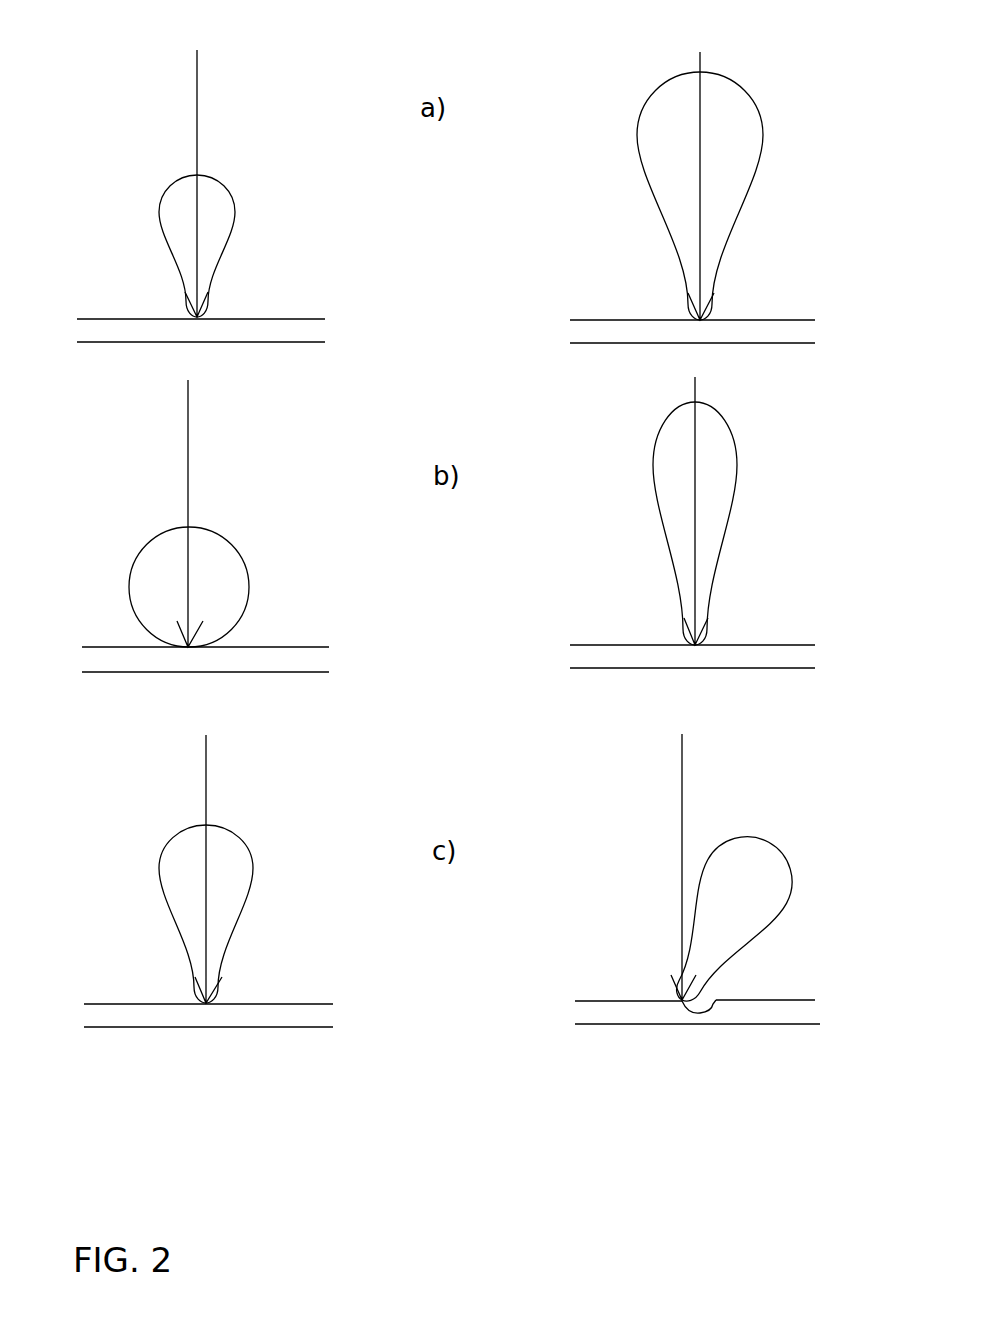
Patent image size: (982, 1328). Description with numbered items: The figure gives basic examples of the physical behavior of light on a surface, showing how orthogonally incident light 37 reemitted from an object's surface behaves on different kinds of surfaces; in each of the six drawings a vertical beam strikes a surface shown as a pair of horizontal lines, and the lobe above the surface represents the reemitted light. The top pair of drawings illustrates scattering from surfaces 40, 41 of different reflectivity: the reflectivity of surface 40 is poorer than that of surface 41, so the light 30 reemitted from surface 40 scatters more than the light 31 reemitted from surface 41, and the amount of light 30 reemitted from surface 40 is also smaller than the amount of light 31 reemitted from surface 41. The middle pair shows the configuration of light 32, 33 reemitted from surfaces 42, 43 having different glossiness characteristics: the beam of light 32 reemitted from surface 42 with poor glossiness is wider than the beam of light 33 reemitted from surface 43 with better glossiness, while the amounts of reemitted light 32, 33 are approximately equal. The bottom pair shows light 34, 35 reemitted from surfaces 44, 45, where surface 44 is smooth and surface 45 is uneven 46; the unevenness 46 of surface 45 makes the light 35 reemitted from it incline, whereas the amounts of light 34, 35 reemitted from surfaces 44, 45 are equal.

The orthogonally incident light 37 is at (205, 70).
The light reemitted from surface 40 30 is at (220, 170).
The light reemitted from surface 41 31 is at (725, 72).
The light reemitted from surface 42 32 is at (210, 527).
The light reemitted from surface 43 33 is at (714, 405).
The light reemitted from surface 44 34 is at (223, 820).
The light reemitted from surface 45 35 is at (778, 843).
The surface 40 is at (255, 315).
The surface 41 is at (749, 317).
The surface 42 is at (262, 645).
The surface 43 is at (743, 642).
The surface 44 is at (259, 1001).
The surface 45 is at (767, 993).
The unevenness 46 is at (685, 1014).